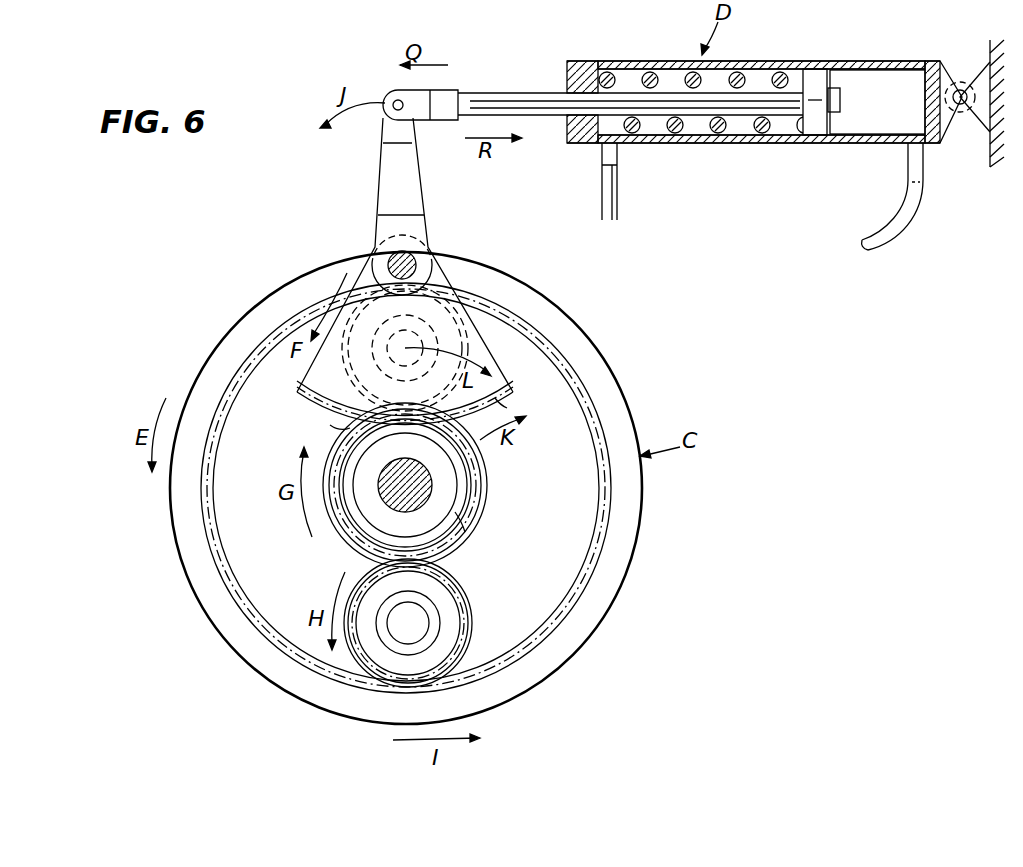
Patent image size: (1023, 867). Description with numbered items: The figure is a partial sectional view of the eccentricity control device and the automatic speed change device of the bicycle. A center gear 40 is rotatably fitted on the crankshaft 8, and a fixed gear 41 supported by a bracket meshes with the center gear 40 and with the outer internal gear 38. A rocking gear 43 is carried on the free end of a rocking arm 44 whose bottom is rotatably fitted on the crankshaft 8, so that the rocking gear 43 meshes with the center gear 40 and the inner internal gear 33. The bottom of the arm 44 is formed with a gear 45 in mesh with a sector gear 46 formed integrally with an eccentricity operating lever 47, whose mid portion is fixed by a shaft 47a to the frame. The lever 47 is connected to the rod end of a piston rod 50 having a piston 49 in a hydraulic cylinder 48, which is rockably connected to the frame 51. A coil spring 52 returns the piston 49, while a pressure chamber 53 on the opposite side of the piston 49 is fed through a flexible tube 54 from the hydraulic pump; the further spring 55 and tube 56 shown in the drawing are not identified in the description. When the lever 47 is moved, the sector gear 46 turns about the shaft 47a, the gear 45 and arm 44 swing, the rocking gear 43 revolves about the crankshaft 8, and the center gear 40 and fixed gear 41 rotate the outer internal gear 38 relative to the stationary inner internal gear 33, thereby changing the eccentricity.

The crankshaft 8 is at (388, 505).
The inner internal gear 33 is at (528, 633).
The outer internal gear 38 is at (430, 488).
The center gear 40 is at (488, 502).
The fixed gear 41 is at (467, 645).
The rocking gear 43 is at (437, 347).
The rocking arm 44 is at (340, 430).
The gear 45 is at (460, 520).
The sector gear 46 is at (500, 403).
The eccentricity operating lever 47 is at (378, 178).
The shaft 47a is at (382, 253).
The hydraulic cylinder 48 is at (812, 70).
The piston 49 is at (818, 130).
The piston rod 50 is at (503, 93).
The frame 51 is at (990, 62).
The coil spring 52 is at (674, 128).
The pressure chamber 53 is at (880, 75).
The flexible tube 54 is at (917, 207).
The compression spring 55 is at (623, 80).
The fluid pipe 56 is at (602, 206).